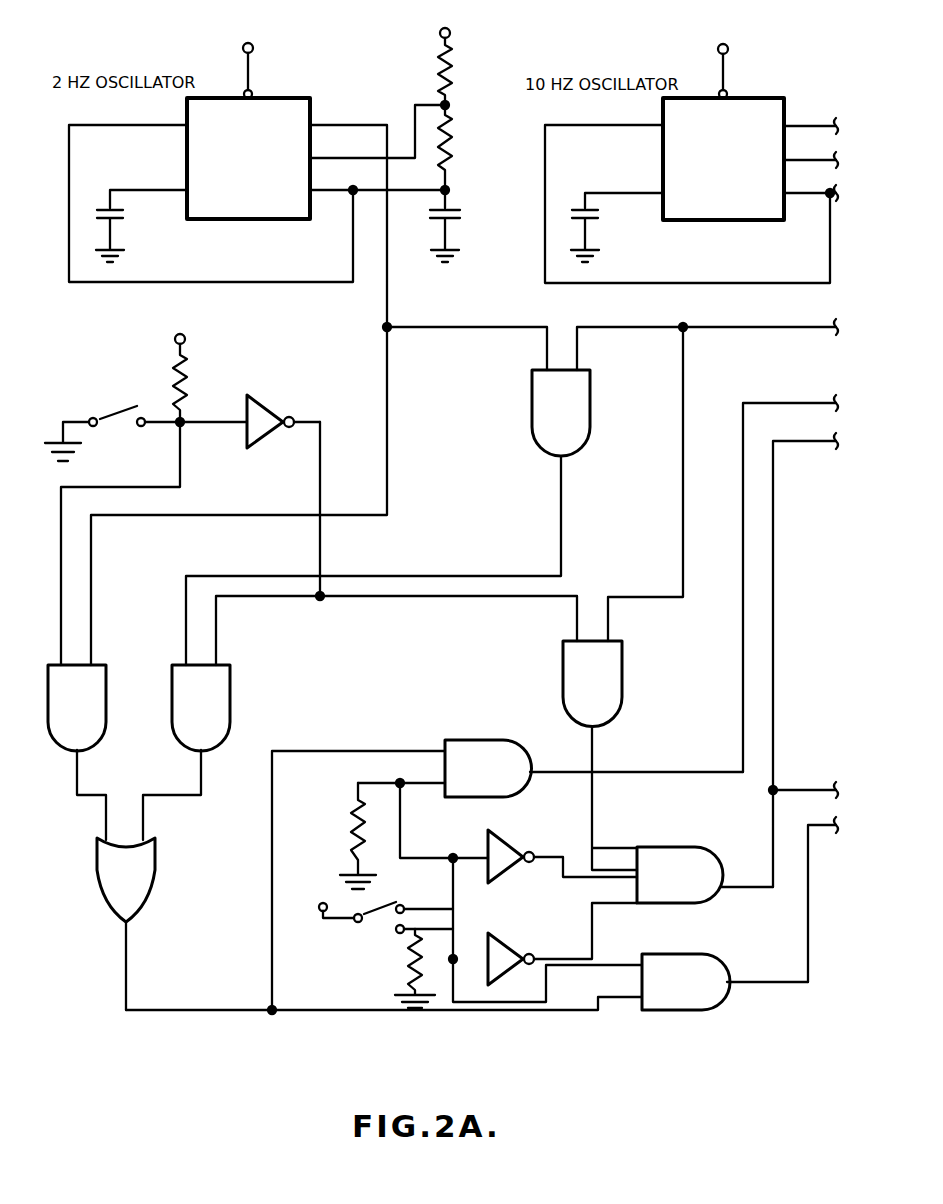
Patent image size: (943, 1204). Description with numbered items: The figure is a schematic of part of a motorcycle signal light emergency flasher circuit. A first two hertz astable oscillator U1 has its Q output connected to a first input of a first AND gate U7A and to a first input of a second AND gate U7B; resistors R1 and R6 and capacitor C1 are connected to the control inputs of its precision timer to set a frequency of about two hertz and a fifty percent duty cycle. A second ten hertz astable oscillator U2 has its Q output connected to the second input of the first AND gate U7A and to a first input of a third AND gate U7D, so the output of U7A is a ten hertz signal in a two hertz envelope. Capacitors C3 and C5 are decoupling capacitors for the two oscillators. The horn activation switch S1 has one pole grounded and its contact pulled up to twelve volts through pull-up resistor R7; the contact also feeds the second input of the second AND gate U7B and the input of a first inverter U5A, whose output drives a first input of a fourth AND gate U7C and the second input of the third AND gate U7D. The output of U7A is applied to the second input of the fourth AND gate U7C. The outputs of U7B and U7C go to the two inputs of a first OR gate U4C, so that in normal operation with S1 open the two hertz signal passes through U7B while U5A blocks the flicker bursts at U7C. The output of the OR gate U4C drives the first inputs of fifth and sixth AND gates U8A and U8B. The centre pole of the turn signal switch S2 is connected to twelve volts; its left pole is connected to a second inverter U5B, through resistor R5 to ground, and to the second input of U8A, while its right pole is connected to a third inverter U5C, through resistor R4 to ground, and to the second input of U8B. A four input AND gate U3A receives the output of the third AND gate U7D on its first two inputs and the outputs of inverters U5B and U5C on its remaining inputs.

The first 2 Hz astable oscillator U1 is at (248, 148).
The second 10 Hz astable oscillator U2 is at (724, 148).
The decoupling capacitor C3 is at (141, 226).
The decoupling capacitor C5 is at (617, 227).
The capacitor C1 is at (470, 226).
The resistor R1 is at (461, 56).
The resistor R6 is at (470, 147).
The pull-up resistor R7 is at (186, 366).
The resistor R5 is at (348, 836).
The resistor R4 is at (406, 968).
The horn activation switch S1 is at (146, 435).
The turn signal switch S2 is at (364, 923).
The first inverter U5A is at (276, 419).
The second inverter U5B is at (553, 857).
The third inverter U5C is at (553, 952).
The first AND gate U7A is at (412, 505).
The second AND gate U7B is at (99, 741).
The fourth AND gate U7C is at (209, 741).
The third AND gate U7D is at (616, 734).
The fifth AND gate U8A is at (550, 769).
The sixth AND gate U8B is at (716, 984).
The four input AND gate U3A is at (696, 873).
The first OR gate U4C is at (148, 912).